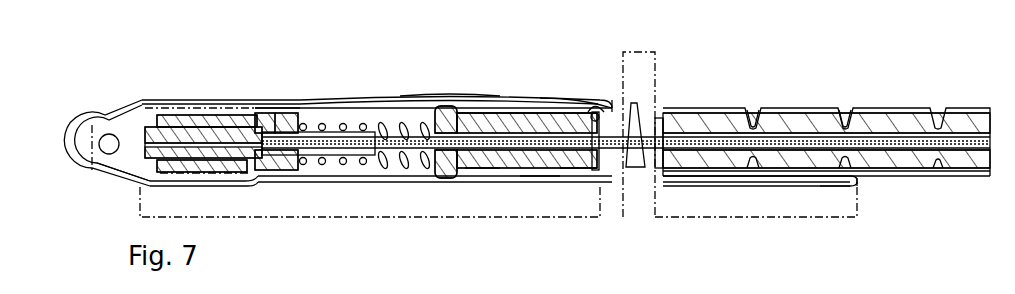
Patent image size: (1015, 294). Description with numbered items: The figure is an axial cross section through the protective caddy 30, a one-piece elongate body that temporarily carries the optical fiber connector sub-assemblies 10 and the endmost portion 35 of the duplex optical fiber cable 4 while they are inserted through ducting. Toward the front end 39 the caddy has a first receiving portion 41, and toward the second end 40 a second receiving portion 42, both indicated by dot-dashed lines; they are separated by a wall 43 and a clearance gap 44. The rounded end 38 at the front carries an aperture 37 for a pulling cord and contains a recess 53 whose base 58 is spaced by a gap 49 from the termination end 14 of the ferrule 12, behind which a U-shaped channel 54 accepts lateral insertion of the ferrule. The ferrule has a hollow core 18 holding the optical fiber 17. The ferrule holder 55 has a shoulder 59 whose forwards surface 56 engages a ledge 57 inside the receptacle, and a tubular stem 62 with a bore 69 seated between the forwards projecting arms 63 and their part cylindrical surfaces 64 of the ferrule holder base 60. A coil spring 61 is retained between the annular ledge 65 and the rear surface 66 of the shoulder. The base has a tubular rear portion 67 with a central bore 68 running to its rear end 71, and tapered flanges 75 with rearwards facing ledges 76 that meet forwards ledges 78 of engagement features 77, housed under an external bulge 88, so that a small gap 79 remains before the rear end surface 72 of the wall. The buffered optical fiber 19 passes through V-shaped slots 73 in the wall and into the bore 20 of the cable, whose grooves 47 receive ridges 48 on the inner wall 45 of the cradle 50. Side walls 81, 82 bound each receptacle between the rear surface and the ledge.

The duplex optical fiber cable 4 is at (812, 107).
The optical fiber connector sub-assembly 10 is at (308, 117).
The optical fiber ferrule 12 is at (200, 128).
The termination end 14 is at (146, 128).
The optical fiber 17 is at (538, 133).
The hollow core 18 is at (172, 118).
The buffered optical fiber 19 is at (508, 135).
The bore of the optical fiber cable 20 is at (870, 135).
The protective caddy 30 is at (572, 96).
The endmost portion of the cable 35 is at (810, 157).
The aperture 37 is at (105, 147).
The rounded end 38 is at (107, 113).
The front end 39 is at (76, 140).
The second end 40 is at (858, 181).
The first receiving portion 41 is at (403, 217).
The second receiving portion 42 is at (805, 217).
The wall 43 is at (612, 162).
The clearance gap 44 is at (643, 52).
The inner wall of the cradle 45 is at (815, 157).
The grooves 47 is at (752, 112).
The ridges 48 is at (756, 162).
The gap 49 is at (118, 115).
The cradle 50 is at (693, 186).
The recess 53 is at (140, 165).
The U-shaped channel 54 is at (248, 188).
The ferrule holder 55 is at (292, 113).
The forwards surface 56 is at (262, 122).
The ledge 57 is at (250, 118).
The base of the recess 58 is at (136, 150).
The shoulder 59 is at (273, 165).
The ferrule holder base 60 is at (486, 110).
The coil spring 61 is at (321, 165).
The tubular stem 62 is at (342, 165).
The forwards projecting arms 63 is at (386, 118).
The part cylindrical surfaces 64 is at (406, 118).
The annular ledge 65 is at (451, 108).
The rear surface of the shoulder 66 is at (300, 165).
The tubular rear portion 67 is at (572, 170).
The central bore 68 is at (503, 170).
The bore through the stem 69 is at (326, 133).
The rear end of the ferrule holder base 71 is at (596, 165).
The rear end surface of the receptacle 72 is at (601, 112).
The slots 73 is at (631, 108).
The tapered flanges 75 is at (434, 112).
The rearwards facing ledge 76 is at (486, 176).
The engagement features 77 is at (463, 172).
The forwards ledge 78 is at (470, 168).
The small gap 79 is at (612, 96).
The side wall 81 is at (542, 178).
The side wall 82 is at (548, 113).
The external bulge 88 is at (468, 105).